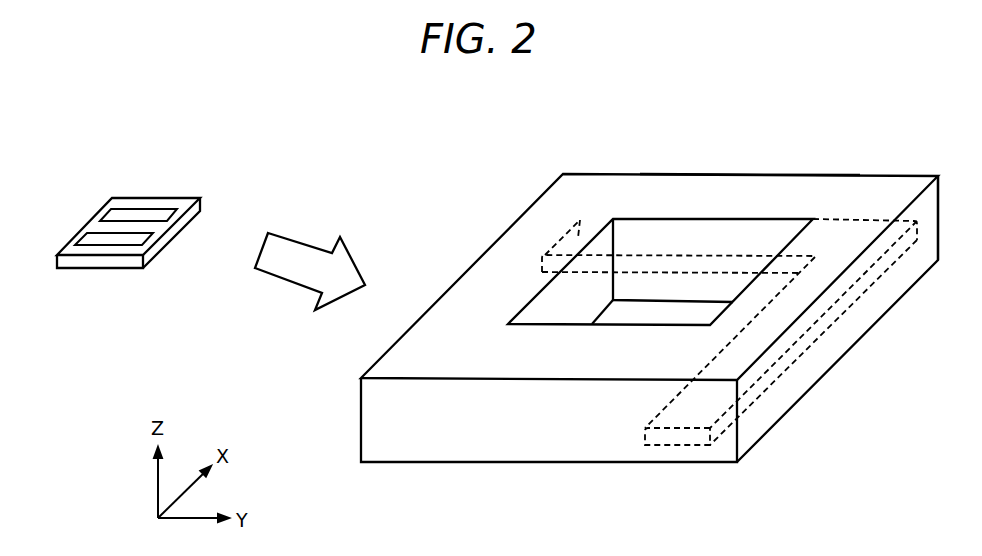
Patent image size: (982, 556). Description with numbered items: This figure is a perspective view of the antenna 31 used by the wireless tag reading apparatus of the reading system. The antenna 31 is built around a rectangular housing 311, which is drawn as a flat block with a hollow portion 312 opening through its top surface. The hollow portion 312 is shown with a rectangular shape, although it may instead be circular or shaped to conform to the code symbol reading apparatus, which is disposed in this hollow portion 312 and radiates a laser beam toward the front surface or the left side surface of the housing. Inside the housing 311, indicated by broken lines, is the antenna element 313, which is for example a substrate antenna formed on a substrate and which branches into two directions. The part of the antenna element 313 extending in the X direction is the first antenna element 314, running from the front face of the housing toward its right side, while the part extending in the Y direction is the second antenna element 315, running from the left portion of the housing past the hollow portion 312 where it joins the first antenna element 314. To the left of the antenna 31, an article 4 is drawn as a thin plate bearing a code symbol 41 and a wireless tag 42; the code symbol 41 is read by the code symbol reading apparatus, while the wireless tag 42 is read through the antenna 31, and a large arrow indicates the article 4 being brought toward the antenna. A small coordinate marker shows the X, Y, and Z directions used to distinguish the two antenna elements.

The antenna 31 is at (462, 143).
The housing 311 is at (806, 174).
The hollow portion 312 is at (705, 160).
The antenna element 313 is at (880, 162).
The first antenna element 314 is at (693, 413).
The second antenna element 315 is at (580, 220).
The article 4 is at (132, 209).
The code symbol 41 is at (123, 212).
The wireless tag 42 is at (137, 238).